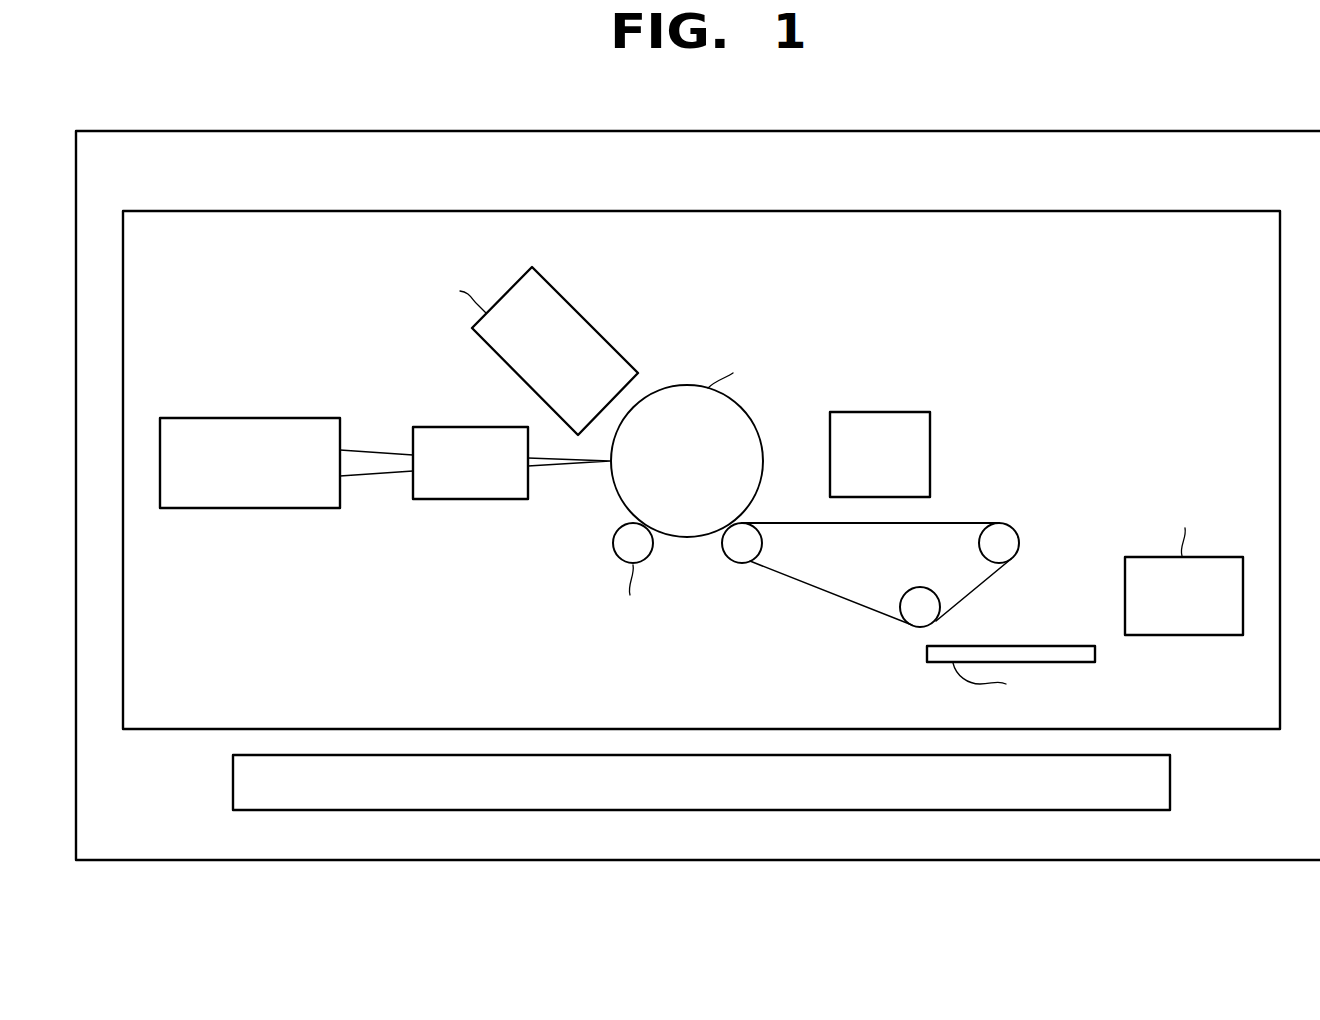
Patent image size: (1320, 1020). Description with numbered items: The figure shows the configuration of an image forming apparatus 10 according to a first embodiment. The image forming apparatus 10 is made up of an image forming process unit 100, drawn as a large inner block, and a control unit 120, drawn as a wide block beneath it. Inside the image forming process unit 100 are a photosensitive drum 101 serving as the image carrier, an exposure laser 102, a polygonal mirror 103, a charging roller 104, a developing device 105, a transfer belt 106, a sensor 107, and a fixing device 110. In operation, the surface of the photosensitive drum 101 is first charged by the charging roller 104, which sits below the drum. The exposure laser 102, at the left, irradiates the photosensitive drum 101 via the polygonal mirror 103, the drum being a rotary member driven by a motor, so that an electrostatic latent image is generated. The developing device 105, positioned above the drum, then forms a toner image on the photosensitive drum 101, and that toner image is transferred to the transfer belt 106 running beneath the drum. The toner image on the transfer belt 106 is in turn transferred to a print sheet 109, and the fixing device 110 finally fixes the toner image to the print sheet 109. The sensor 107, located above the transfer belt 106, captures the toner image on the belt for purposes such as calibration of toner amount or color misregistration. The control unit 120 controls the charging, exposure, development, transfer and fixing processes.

The image forming apparatus 10 is at (1147, 130).
The image forming process unit 100 is at (742, 210).
The photosensitive drum 101 is at (721, 425).
The exposure laser 102 is at (250, 512).
The polygonal mirror 103 is at (468, 527).
The charging roller 104 is at (605, 657).
The developing device 105 is at (477, 351).
The transfer belt 106 is at (975, 523).
The sensor 107 is at (877, 411).
The print sheet 109 is at (1160, 683).
The fixing device 110 is at (1184, 553).
The control unit 120 is at (1170, 782).